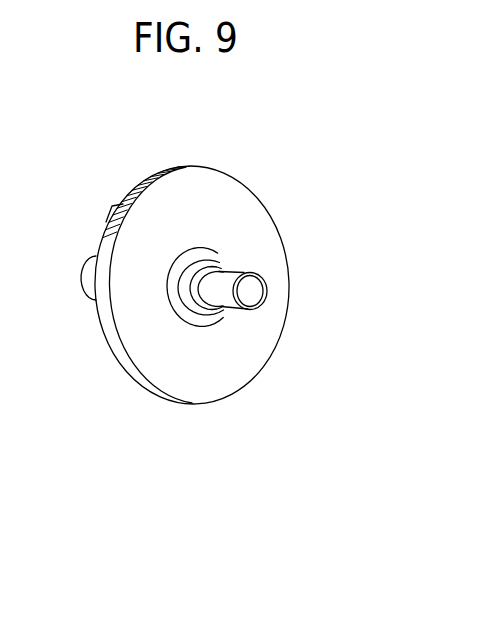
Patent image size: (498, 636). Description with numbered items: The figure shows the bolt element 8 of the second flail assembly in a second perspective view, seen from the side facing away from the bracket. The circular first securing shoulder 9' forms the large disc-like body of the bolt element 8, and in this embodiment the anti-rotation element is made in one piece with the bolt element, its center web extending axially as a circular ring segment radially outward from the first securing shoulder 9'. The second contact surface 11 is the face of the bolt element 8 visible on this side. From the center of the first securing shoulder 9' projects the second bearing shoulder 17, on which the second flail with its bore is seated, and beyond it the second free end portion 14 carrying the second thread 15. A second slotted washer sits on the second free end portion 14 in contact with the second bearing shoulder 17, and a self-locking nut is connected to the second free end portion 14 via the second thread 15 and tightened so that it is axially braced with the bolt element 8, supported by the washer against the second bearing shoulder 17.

The bolt element 8 is at (176, 437).
The first securing shoulder 9' is at (210, 201).
The second contact surface 11 is at (225, 218).
The second bearing shoulder 17 is at (220, 253).
The second free end portion 14 is at (217, 318).
The second thread 15 is at (225, 298).